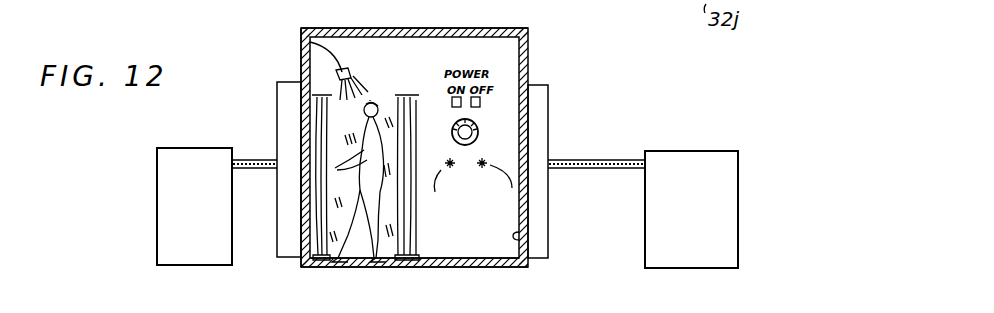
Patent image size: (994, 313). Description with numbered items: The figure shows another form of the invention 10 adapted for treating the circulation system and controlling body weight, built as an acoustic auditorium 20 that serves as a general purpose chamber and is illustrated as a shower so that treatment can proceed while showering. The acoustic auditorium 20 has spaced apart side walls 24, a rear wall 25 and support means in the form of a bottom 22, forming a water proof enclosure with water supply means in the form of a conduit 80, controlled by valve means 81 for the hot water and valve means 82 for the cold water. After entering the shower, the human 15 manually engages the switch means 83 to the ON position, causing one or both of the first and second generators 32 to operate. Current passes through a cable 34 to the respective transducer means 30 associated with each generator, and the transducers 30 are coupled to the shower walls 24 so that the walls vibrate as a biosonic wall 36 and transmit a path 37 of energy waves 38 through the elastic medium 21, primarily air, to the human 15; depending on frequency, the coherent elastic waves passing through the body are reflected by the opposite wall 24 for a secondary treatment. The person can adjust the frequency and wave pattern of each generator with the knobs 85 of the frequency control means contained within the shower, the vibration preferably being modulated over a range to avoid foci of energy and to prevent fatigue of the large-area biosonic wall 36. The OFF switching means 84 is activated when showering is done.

The invention 10 is at (471, 27).
The human 15 is at (371, 87).
The acoustic auditorium 20 is at (300, 60).
The elastic medium 21 is at (480, 266).
The bottom 22 is at (360, 265).
The side walls 24 is at (301, 228).
The rear wall 25 is at (377, 44).
The transducer means 30 is at (284, 98).
The generators 32 is at (228, 267).
The cable 34 is at (246, 162).
The biosonic wall 36 is at (528, 240).
The path 37 is at (315, 264).
The energy waves 38 is at (325, 143).
The conduit 80 is at (330, 28).
The valve means 81 is at (448, 187).
The valve means 82 is at (492, 187).
The switch means 83 is at (450, 100).
The switching means 84 is at (483, 100).
The knobs 85 is at (478, 137).